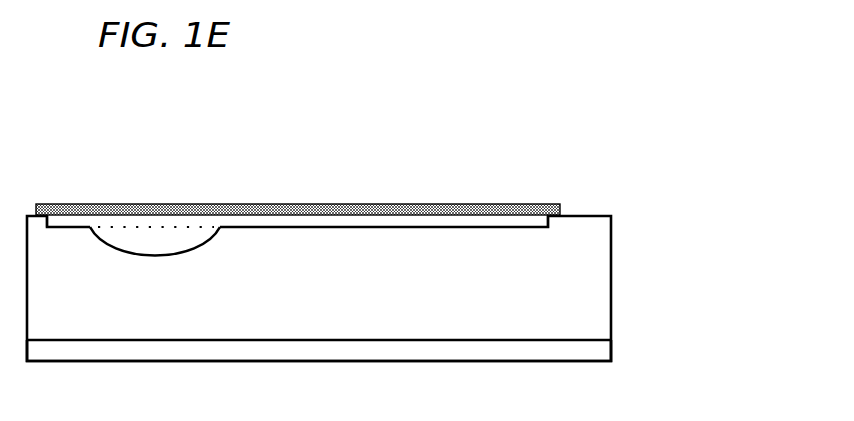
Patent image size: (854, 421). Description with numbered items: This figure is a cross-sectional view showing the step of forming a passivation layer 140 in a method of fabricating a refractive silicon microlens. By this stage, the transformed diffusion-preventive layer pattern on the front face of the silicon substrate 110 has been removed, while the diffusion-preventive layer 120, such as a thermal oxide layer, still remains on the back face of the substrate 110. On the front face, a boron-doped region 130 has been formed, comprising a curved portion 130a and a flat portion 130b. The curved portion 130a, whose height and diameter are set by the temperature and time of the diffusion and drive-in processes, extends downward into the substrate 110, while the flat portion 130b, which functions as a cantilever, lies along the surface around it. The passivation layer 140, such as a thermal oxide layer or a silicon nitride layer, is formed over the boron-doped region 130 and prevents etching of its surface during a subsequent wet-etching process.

The silicon substrate 110 is at (611, 282).
The diffusion-preventive layer 120 is at (611, 350).
The boron-doped region 130 is at (297, 273).
The curved portion 130a is at (203, 240).
The flat portion 130b is at (297, 278).
The passivation layer 140 is at (552, 205).